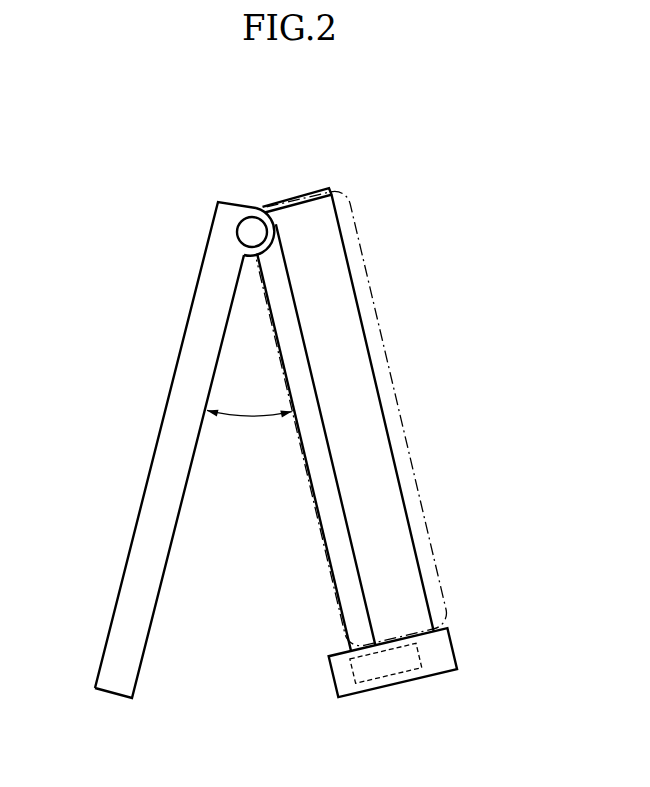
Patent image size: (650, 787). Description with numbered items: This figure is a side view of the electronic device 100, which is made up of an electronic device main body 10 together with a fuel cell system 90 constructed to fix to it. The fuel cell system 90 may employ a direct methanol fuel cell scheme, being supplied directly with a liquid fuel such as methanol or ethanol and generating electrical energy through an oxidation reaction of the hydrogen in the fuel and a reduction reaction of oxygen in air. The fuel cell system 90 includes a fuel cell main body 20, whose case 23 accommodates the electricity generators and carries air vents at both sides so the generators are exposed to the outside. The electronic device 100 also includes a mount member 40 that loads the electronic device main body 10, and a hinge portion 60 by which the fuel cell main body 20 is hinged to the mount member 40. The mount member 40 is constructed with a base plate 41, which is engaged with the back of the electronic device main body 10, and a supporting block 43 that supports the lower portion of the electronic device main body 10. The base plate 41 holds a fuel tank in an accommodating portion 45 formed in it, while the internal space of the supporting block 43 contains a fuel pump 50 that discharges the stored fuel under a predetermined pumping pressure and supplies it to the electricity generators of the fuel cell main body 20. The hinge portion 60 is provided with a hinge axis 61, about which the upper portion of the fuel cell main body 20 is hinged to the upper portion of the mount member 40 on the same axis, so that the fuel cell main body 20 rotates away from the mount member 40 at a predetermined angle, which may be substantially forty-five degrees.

The electronic device 100 is at (243, 102).
The electronic device main body 10 is at (398, 384).
The fuel cell main body 20 is at (129, 450).
The case 23 is at (123, 575).
The mount member 40 is at (375, 570).
The base plate 41 is at (337, 542).
The supporting block 43 is at (433, 660).
The accommodating portion 45 is at (330, 311).
The fuel pump 50 is at (352, 676).
The hinge portion 60 is at (254, 197).
The hinge axis 61 is at (250, 231).
The fuel cell system 90 is at (85, 333).